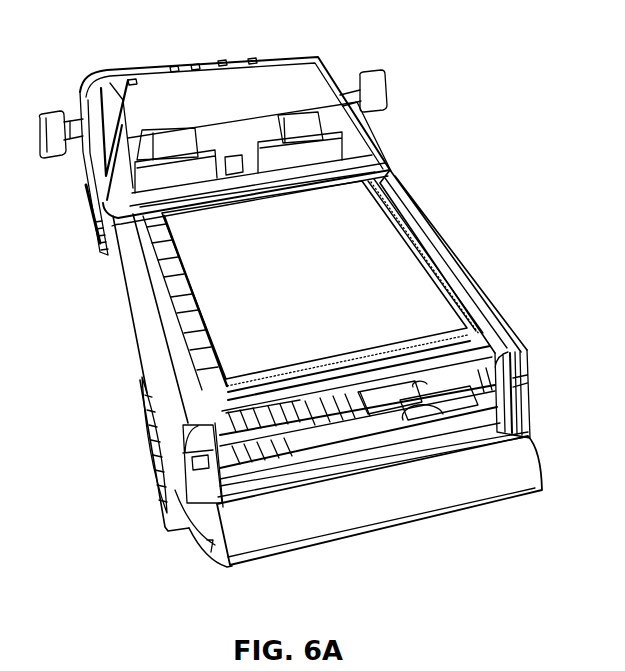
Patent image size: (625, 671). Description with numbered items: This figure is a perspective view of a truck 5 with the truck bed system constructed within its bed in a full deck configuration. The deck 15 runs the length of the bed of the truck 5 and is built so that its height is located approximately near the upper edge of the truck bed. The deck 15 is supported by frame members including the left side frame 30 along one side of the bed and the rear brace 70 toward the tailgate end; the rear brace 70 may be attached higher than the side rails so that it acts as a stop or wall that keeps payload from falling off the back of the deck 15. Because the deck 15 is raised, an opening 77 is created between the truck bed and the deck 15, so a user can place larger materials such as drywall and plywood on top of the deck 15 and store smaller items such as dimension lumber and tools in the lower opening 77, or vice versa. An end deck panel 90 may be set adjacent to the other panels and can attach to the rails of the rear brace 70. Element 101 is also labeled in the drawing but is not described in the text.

The truck 5 is at (285, 80).
The deck 15 is at (190, 347).
The left side frame 30 is at (153, 258).
The rear brace 70 is at (396, 440).
The opening 77 is at (470, 407).
The end deck panel 90 is at (282, 404).
The cover panel 101 is at (203, 303).